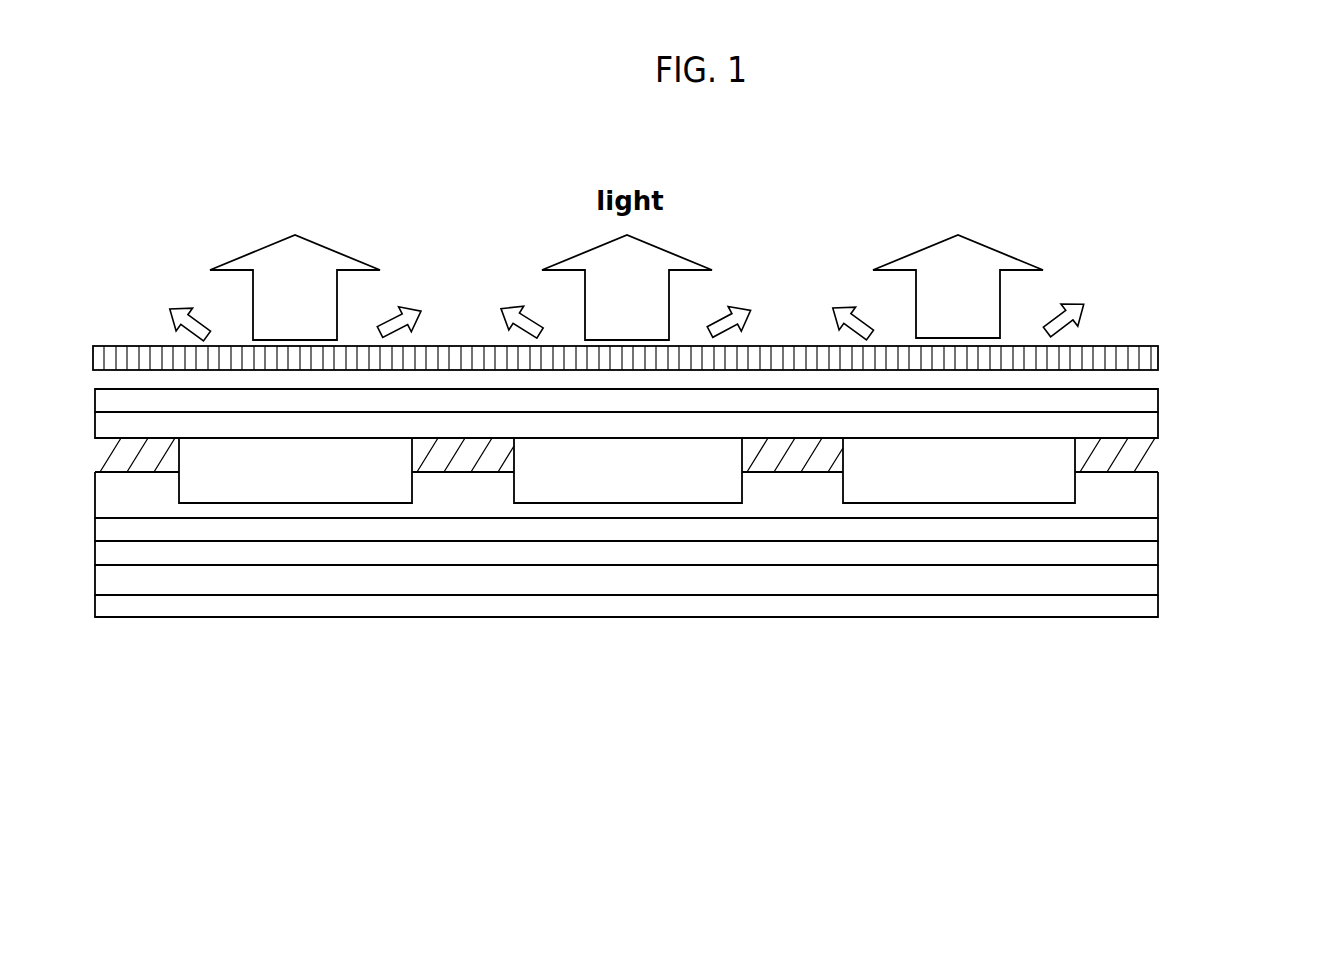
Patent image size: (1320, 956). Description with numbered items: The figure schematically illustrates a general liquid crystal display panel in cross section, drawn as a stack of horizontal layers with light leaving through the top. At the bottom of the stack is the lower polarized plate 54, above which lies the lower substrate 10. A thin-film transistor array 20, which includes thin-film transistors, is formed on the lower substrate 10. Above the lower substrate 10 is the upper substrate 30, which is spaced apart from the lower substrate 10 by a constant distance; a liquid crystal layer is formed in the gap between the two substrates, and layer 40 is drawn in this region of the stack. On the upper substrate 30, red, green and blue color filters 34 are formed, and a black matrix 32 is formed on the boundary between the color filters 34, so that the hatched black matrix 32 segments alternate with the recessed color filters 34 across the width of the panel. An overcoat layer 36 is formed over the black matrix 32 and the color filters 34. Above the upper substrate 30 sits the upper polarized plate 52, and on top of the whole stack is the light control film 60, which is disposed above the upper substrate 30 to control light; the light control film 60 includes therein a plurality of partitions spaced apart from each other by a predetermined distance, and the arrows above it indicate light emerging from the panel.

The lower substrate 10 is at (1143, 575).
The thin-film transistor array 20 is at (1143, 550).
The upper substrate 30 is at (1143, 421).
The black matrix 32 is at (1143, 452).
The color filters 34 is at (955, 486).
The overcoat layer 36 is at (1143, 492).
The first electrode 40 is at (1143, 528).
The upper polarized plate 52 is at (1148, 398).
The lower polarized plate 54 is at (1143, 600).
The light control film 60 is at (1150, 360).